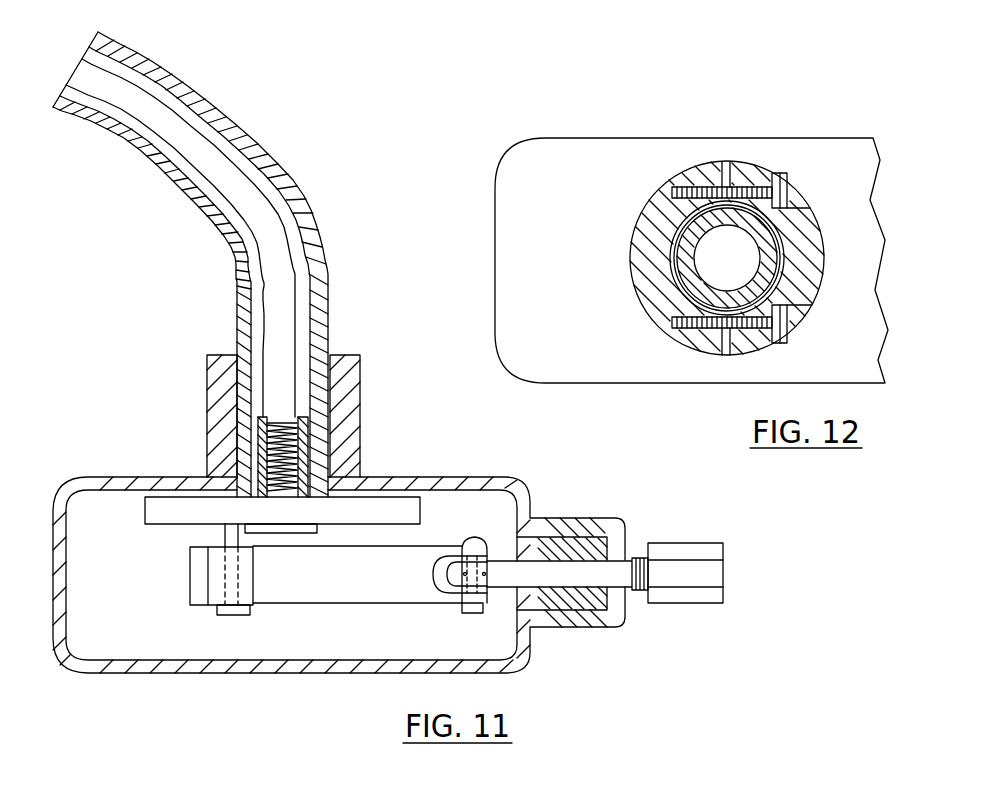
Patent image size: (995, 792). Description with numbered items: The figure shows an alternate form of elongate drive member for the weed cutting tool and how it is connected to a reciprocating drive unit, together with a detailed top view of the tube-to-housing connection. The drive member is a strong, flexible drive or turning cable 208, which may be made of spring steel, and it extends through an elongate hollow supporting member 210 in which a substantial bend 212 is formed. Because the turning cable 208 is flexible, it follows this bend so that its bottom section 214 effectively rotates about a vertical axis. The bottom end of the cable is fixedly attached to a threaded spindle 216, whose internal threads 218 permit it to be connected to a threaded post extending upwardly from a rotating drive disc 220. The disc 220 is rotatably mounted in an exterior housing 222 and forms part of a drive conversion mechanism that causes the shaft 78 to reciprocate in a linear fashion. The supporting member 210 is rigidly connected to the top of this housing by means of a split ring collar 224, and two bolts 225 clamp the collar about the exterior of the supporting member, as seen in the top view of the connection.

In FIG. 11, the shaft 78 is at (573, 572).
In FIG. 11, the drive cable 208 is at (270, 215).
In FIG. 11, the hollow supporting member 210 is at (175, 88).
In FIG. 12, the hollow supporting member 210 is at (710, 213).
In FIG. 11, the bend 212 is at (225, 240).
In FIG. 11, the bottom section 214 is at (292, 335).
In FIG. 11, the threaded spindle 216 is at (303, 423).
In FIG. 11, the internal threads 218 is at (263, 457).
In FIG. 11, the rotating drive disc 220 is at (402, 503).
In FIG. 12, the exterior housing 222 is at (557, 152).
In FIG. 11, the split ring collar 224 is at (222, 416).
In FIG. 12, the split ring collar 224 is at (635, 262).
In FIG. 12, the bolts 225 is at (780, 173).